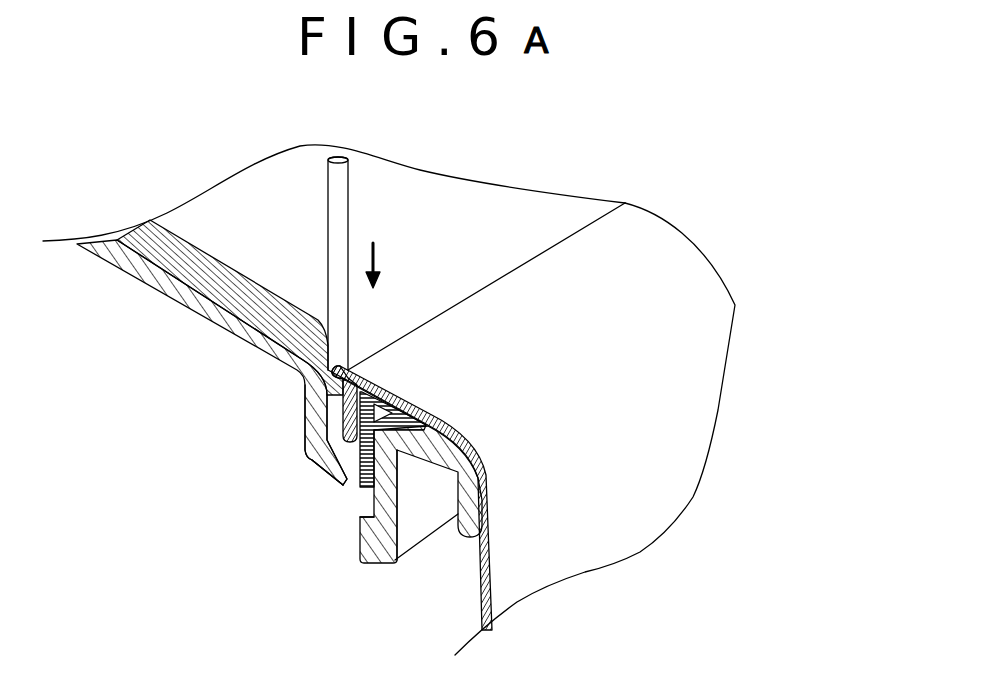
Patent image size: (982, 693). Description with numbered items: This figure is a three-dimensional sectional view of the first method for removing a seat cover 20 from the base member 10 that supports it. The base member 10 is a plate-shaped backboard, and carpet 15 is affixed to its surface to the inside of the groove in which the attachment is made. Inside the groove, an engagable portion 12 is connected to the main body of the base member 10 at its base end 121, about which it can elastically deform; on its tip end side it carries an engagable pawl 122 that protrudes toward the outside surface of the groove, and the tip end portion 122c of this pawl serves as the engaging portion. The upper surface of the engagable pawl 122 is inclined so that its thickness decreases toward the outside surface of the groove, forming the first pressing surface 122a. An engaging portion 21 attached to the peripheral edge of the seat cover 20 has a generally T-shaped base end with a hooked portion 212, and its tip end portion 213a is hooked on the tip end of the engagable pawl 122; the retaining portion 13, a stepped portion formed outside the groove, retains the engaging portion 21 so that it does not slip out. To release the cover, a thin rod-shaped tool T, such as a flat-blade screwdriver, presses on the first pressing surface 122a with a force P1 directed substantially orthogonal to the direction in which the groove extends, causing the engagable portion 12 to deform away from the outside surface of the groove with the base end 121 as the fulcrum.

The base member 10 is at (158, 300).
The engagable portion 12 is at (308, 460).
The base end 121 is at (335, 412).
The engagable pawl 122 is at (305, 424).
The first pressing surface 122a is at (397, 462).
The tip end portion 122c is at (338, 486).
The retaining portion 13 is at (440, 424).
The carpet 15 is at (245, 190).
The seat cover 20 is at (605, 463).
The engaging portion 21 is at (355, 527).
The hooked portion 212 is at (435, 404).
The tip end portion 213a is at (352, 521).
The tool T is at (345, 200).
The force P1 is at (393, 265).